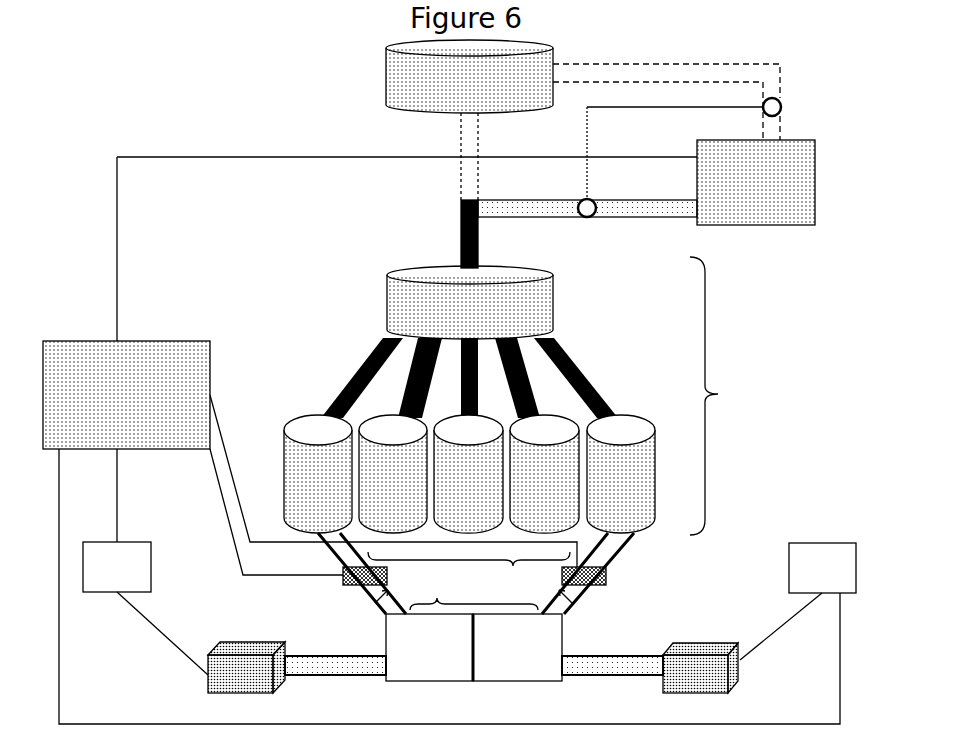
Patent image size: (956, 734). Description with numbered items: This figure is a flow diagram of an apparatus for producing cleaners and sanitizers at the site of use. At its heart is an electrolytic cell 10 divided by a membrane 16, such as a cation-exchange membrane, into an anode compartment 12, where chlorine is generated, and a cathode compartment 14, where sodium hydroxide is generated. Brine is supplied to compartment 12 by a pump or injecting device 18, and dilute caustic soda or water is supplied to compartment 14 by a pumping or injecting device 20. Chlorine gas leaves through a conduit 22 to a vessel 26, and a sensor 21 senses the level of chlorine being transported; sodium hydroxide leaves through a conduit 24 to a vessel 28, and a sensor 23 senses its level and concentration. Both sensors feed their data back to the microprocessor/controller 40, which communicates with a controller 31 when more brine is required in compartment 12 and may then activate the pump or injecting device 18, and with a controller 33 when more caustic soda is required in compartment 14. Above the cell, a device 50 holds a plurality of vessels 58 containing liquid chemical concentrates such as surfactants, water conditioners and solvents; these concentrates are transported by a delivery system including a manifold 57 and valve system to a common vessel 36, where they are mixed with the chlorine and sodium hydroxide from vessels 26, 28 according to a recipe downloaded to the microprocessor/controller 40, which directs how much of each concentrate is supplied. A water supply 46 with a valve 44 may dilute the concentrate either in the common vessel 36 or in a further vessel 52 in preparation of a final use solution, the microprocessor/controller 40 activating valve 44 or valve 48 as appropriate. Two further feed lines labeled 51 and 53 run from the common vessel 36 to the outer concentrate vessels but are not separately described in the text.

The electrolytic cell 10 is at (474, 593).
The anode compartment 12 is at (427, 668).
The cathode compartment 14 is at (520, 668).
The membrane 16 is at (473, 681).
The pump or injecting device 18 is at (245, 645).
The pumping or injecting device 20 is at (705, 642).
The sensor 21 is at (345, 584).
The conduit 22 is at (340, 560).
The sensor 23 is at (607, 585).
The conduit 24 is at (615, 560).
The vessel 26 is at (295, 475).
The vessel 28 is at (645, 477).
The controller 31 is at (142, 567).
The controller 33 is at (847, 567).
The common vessel 36 is at (405, 318).
The microprocessor/controller 40 is at (158, 357).
The valve 44 is at (593, 216).
The water supply 46 is at (806, 165).
The valve 48 is at (780, 99).
The device 50 is at (551, 396).
The left feed tube 51 is at (352, 373).
The vessel 52 is at (412, 88).
The right feed tube 53 is at (590, 373).
The manifold 57 is at (505, 340).
The vessels 58 is at (469, 573).